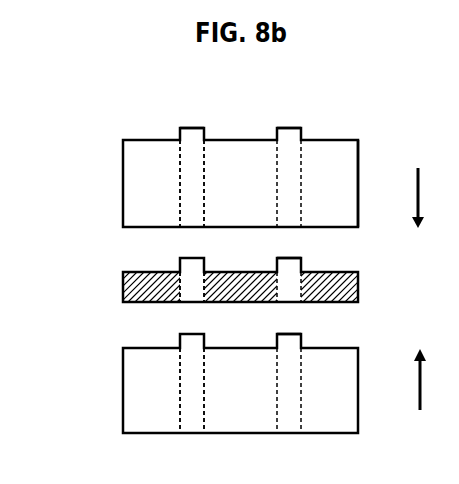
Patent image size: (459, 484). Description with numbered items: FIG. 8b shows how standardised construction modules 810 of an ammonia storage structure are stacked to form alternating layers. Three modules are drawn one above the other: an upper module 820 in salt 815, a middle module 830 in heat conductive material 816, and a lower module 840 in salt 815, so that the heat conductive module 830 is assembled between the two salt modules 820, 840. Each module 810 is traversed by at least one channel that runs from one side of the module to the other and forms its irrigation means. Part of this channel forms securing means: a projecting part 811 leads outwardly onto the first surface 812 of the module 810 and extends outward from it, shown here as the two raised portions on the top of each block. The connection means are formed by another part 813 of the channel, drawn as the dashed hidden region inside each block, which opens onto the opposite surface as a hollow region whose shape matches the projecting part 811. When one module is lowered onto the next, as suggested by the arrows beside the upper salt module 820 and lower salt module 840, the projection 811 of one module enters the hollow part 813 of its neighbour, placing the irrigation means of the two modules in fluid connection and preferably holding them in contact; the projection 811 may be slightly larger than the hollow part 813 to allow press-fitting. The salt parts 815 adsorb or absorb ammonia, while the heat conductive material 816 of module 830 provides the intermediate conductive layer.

The module 810 is at (360, 104).
The projecting part of channel 811 is at (291, 128).
The first surface 812 is at (238, 117).
The hollow part of channel 813 is at (193, 222).
The part in salt 815 is at (342, 183).
The part in heat conductive material 816 is at (343, 291).
The module in salt 820 is at (100, 188).
The module in heat conductive material 830 is at (100, 292).
The module in salt 840 is at (100, 395).